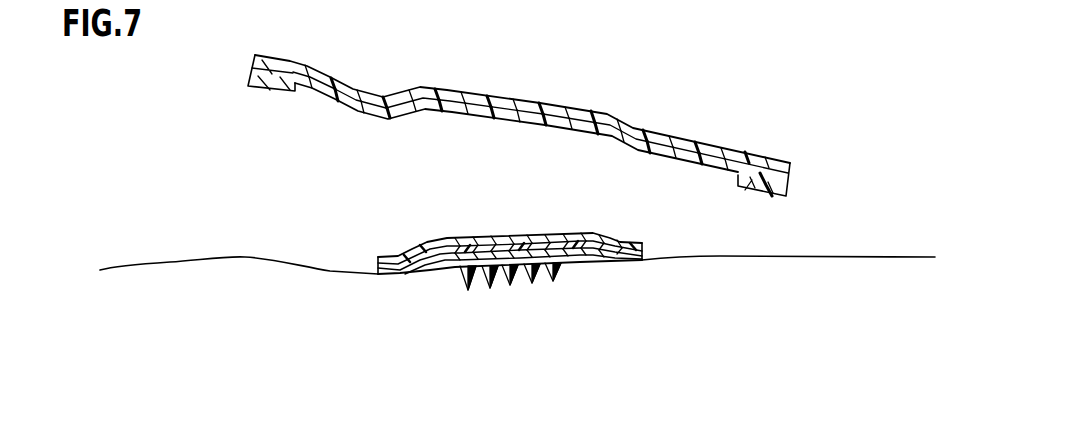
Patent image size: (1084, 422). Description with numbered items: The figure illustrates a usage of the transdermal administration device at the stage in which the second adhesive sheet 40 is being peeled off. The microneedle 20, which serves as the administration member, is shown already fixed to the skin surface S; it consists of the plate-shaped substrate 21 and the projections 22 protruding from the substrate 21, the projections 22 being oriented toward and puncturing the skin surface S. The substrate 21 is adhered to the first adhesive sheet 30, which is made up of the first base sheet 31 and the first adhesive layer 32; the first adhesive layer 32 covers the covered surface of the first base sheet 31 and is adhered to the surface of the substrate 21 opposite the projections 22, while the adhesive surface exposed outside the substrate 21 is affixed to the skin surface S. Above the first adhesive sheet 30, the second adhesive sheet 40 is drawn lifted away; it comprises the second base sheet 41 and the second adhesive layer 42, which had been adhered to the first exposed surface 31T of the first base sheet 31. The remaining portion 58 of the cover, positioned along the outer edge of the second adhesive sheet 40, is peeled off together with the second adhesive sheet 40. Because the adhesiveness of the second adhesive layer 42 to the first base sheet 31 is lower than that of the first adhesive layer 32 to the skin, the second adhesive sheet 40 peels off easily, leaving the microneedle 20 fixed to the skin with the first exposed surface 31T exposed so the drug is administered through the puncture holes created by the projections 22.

The second adhesive sheet 40 is at (575, 150).
The second base sheet 41 is at (792, 164).
The second adhesive layer 42 is at (790, 174).
The remaining portion 58 is at (750, 189).
The skin surface S is at (907, 258).
The first adhesive sheet 30 is at (543, 277).
The first base sheet 31 is at (540, 254).
The first exposed surface 31T is at (523, 235).
The first adhesive layer 32 is at (516, 279).
The microneedle 20 is at (510, 320).
The substrate 21 is at (417, 271).
The projection 22 is at (468, 283).